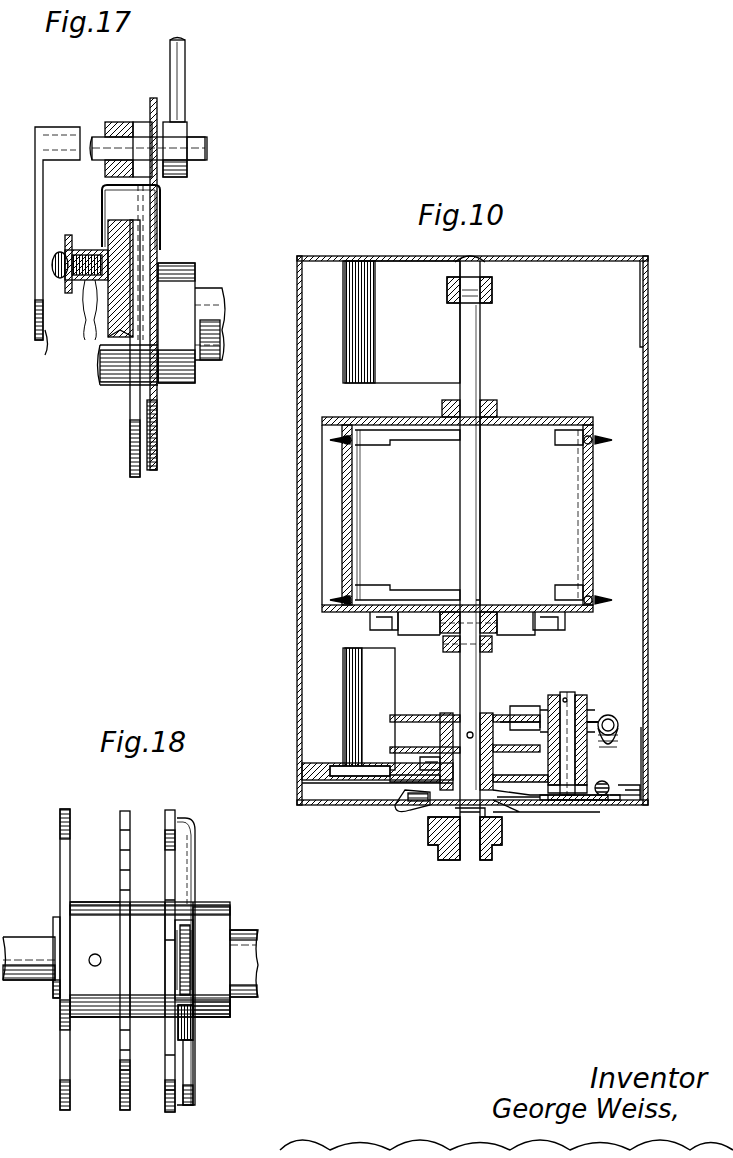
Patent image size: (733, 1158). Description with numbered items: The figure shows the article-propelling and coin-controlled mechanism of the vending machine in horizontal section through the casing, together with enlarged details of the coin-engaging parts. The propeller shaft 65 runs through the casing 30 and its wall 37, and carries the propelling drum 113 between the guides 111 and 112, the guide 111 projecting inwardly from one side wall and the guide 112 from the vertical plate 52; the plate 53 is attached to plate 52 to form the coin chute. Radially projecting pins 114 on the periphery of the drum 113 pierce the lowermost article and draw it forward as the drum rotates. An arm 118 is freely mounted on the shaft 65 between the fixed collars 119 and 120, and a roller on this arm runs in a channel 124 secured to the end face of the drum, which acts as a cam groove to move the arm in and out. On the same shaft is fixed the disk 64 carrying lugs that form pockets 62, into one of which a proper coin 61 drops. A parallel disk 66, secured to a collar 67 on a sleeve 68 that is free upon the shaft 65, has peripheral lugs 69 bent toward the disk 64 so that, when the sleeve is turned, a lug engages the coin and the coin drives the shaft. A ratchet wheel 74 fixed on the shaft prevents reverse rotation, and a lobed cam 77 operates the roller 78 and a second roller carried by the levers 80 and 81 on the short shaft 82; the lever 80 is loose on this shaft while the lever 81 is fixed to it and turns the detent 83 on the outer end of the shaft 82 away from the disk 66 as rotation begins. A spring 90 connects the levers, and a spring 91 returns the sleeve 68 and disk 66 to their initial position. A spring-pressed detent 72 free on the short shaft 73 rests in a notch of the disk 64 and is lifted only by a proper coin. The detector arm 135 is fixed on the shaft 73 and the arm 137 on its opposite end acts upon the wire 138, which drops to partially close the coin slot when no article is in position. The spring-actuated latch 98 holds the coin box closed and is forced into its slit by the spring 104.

In FIG. 10, the casing 30 is at (297, 647).
In FIG. 10, the casing wall 37 is at (648, 651).
In FIG. 10, the vertical plate 52 is at (580, 805).
In FIG. 10, the vertical plate 53 is at (321, 785).
In FIG. 17, the coin 61 is at (150, 244).
In FIG. 18, the coin 61 is at (190, 930).
In FIG. 18, the pocket 62 is at (190, 970).
In FIG. 17, the disk 64 is at (140, 434).
In FIG. 10, the disk 64 is at (428, 758).
In FIG. 18, the disk 64 is at (165, 812).
In FIG. 17, the propeller shaft 65 is at (210, 300).
In FIG. 10, the propeller shaft 65 is at (470, 497).
In FIG. 18, the propeller shaft 65 is at (22, 940).
In FIG. 17, the disk 66 is at (157, 465).
In FIG. 10, the disk 66 is at (418, 793).
In FIG. 18, the disk 66 is at (195, 843).
In FIG. 10, the collar 67 is at (432, 835).
In FIG. 18, the collar 67 is at (230, 1010).
In FIG. 10, the sleeve 68 is at (478, 853).
In FIG. 18, the sleeve 68 is at (250, 948).
In FIG. 18, the peripheral flanges or lugs 69 is at (180, 897).
In FIG. 17, the spring-pressed detent 72 is at (139, 122).
In FIG. 17, the short shaft 73 is at (105, 138).
In FIG. 10, the ratchet wheel 74 is at (395, 749).
In FIG. 18, the ratchet wheel 74 is at (120, 817).
In FIG. 10, the lobed cam 77 is at (410, 715).
In FIG. 18, the lobed cam 77 is at (60, 832).
In FIG. 10, the roller 78 is at (503, 715).
In FIG. 10, the lever 80 is at (520, 730).
In FIG. 10, the lever 81 is at (530, 706).
In FIG. 10, the short shaft 82 is at (568, 692).
In FIG. 10, the detent 83 is at (549, 806).
In FIG. 10, the spring 90 is at (610, 714).
In FIG. 10, the spring 91 is at (512, 815).
In FIG. 10, the spring actuated latch 98 is at (620, 800).
In FIG. 10, the spring 104 is at (603, 781).
In FIG. 10, the guide 111 is at (343, 337).
In FIG. 10, the guide 112 is at (343, 698).
In FIG. 10, the propelling drum 113 is at (593, 530).
In FIG. 10, the radially projecting pins 114 is at (604, 435).
In FIG. 10, the arm 118 is at (440, 640).
In FIG. 10, the fixed collar 119 is at (492, 650).
In FIG. 10, the fixed collar 120 is at (502, 605).
In FIG. 10, the channel 124 is at (372, 630).
In FIG. 17, the detector arm 135 is at (38, 355).
In FIG. 17, the arm 137 is at (185, 175).
In FIG. 17, the wire 138 is at (187, 55).